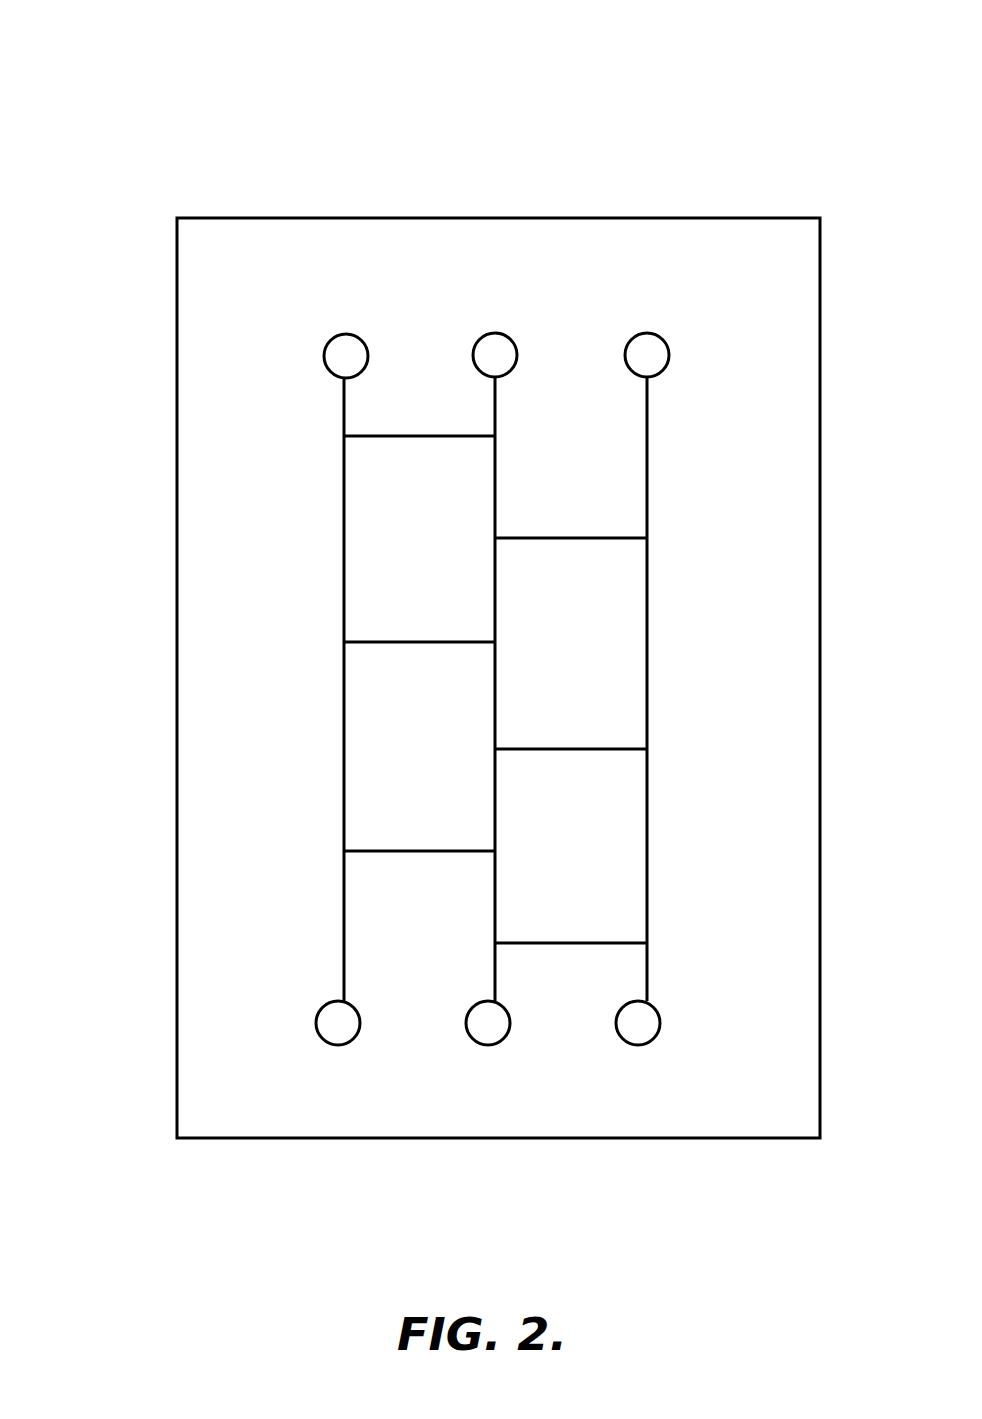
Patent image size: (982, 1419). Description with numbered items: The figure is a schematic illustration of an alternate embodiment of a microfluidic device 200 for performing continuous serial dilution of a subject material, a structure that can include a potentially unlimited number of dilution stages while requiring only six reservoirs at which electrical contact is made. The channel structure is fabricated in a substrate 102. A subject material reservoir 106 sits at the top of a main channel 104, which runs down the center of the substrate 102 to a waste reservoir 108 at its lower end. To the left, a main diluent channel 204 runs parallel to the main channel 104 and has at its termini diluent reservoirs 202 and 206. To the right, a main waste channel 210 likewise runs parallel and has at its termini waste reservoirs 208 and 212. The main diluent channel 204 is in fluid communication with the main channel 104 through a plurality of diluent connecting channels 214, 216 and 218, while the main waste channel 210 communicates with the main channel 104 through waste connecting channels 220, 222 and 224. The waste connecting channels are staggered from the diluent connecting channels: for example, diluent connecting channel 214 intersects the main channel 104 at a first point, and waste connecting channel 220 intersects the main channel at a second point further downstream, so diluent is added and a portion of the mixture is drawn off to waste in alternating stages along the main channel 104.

The microfluidic device 200 is at (183, 82).
The substrate 102 is at (645, 242).
The main channel 104 is at (495, 498).
The subject material reservoir 106 is at (517, 355).
The waste reservoir 108 is at (510, 1023).
The diluent reservoir 202 is at (368, 356).
The main diluent channel 204 is at (344, 490).
The diluent reservoir 206 is at (360, 1023).
The waste reservoir 208 is at (669, 355).
The main waste channel 210 is at (647, 496).
The waste reservoir 212 is at (660, 1023).
The diluent connecting channel 214 is at (408, 438).
The diluent connecting channel 216 is at (415, 644).
The diluent connecting channel 218 is at (417, 853).
The waste connecting channel 220 is at (553, 540).
The waste connecting channel 222 is at (555, 751).
The waste connecting channel 224 is at (538, 941).